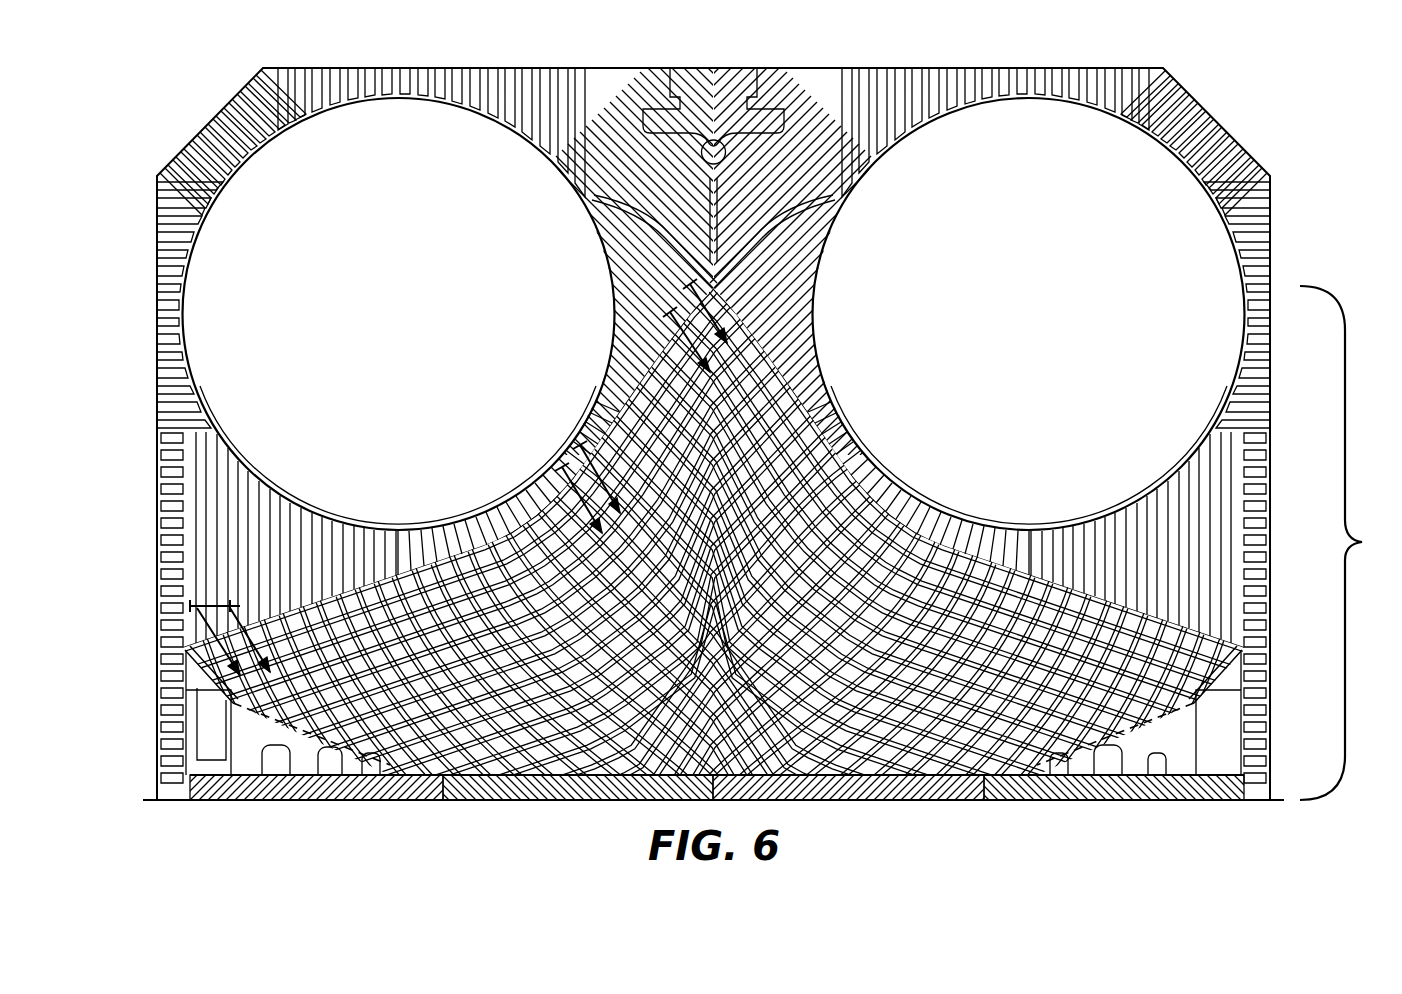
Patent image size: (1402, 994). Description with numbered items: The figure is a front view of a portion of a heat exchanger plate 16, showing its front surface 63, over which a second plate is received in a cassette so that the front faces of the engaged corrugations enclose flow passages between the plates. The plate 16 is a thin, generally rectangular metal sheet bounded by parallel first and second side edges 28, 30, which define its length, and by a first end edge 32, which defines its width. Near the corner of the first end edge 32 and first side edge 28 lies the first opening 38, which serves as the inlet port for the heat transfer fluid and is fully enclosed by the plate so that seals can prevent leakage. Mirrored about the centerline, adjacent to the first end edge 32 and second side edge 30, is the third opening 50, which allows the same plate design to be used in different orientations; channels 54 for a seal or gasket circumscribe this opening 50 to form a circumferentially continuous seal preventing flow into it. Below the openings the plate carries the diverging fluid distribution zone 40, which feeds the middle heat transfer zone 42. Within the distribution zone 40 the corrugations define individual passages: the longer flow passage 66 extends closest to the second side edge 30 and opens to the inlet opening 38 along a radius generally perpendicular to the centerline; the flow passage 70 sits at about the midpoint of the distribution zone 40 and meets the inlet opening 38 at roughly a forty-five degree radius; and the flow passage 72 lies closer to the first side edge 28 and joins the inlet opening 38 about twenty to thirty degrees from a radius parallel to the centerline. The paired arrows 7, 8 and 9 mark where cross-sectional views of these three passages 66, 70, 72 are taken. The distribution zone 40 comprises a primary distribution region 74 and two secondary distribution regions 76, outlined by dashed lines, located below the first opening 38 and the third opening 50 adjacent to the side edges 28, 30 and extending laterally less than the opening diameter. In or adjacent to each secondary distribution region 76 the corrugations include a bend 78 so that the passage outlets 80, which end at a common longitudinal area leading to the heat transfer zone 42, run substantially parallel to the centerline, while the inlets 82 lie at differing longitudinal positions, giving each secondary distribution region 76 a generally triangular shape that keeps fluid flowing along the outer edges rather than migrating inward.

The plate 16 is at (1232, 103).
The first side edge 28 is at (160, 390).
The second side edge 30 is at (1272, 212).
The first end edge 32 is at (577, 66).
The first opening 38 is at (188, 346).
The third opening 50 is at (1248, 290).
The diverging fluid distribution zone 40 is at (1351, 543).
The heat transfer zone 42 is at (598, 785).
The channels 54 is at (922, 537).
The front surface 63 is at (857, 88).
The flow passage 66 is at (666, 328).
The flow passage 70 is at (607, 513).
The flow passage 72 is at (262, 688).
The primary distribution region 74 is at (318, 584).
The secondary distribution regions 76 is at (1157, 782).
The bend 78 is at (325, 757).
The outlets 80 is at (1112, 770).
The inlets 82 is at (228, 703).
The arrows 7 is at (686, 304).
The arrows 8 is at (577, 467).
The arrows 9 is at (225, 623).